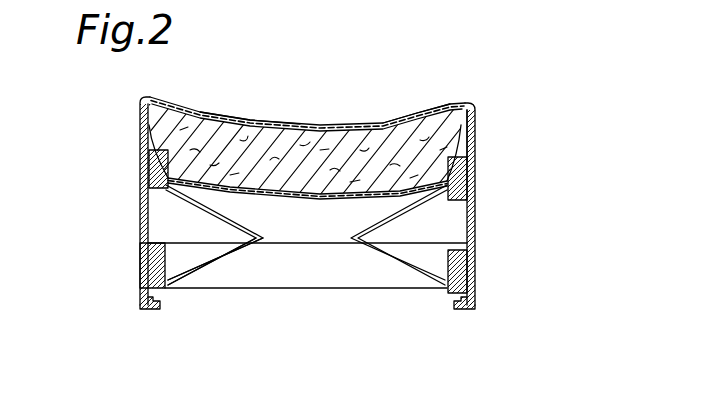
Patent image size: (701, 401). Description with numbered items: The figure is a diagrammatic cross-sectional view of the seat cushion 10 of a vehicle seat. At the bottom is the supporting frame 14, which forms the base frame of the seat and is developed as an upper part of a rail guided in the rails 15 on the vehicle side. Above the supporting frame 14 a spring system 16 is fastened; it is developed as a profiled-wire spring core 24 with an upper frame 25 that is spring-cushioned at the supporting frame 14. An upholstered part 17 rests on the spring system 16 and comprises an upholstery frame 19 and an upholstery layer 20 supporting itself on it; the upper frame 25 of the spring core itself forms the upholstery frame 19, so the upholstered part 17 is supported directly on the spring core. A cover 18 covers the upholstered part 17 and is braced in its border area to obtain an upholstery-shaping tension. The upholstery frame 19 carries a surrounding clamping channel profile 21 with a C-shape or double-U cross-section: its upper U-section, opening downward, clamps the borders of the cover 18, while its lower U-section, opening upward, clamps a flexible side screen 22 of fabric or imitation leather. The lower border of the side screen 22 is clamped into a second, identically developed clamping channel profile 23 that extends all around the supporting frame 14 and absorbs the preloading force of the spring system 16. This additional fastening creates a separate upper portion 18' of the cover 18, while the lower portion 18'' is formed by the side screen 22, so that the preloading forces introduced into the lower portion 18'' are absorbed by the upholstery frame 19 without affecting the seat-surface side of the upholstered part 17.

The seat cushion 10 is at (330, 113).
The supporting frame 14 is at (287, 273).
The rails 15 is at (148, 312).
The spring system 16 is at (210, 215).
The upholstered part 17 is at (286, 124).
The cover 18 is at (250, 98).
The upper portion of the cover 18' is at (104, 201).
The lower portion of the cover 18'' is at (529, 204).
The upholstery frame 19 is at (318, 199).
The upholstery layer 20 is at (414, 121).
The clamping channel profile 21 is at (472, 137).
The side screen 22 is at (472, 228).
The second clamping channel profile 23 is at (457, 243).
The profiled-wire spring core 24 is at (232, 265).
The upper frame 25 is at (335, 207).